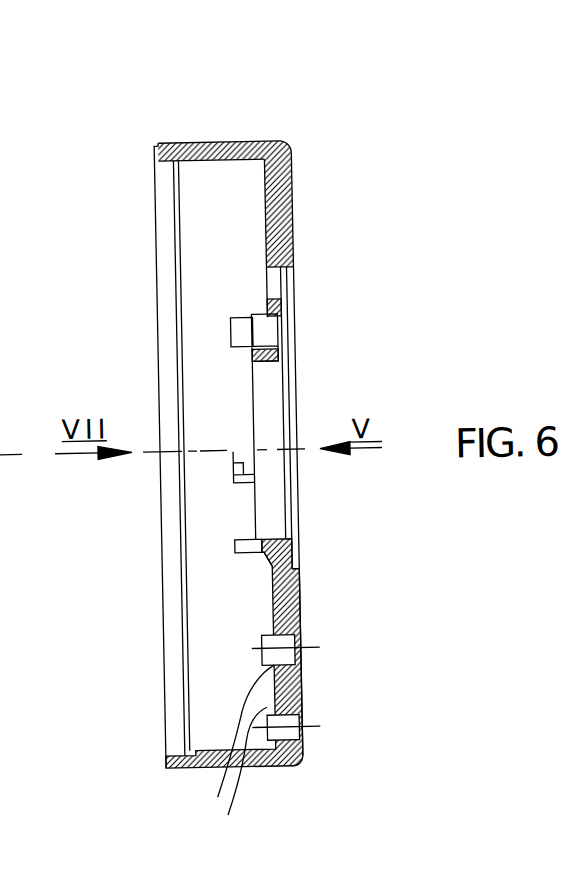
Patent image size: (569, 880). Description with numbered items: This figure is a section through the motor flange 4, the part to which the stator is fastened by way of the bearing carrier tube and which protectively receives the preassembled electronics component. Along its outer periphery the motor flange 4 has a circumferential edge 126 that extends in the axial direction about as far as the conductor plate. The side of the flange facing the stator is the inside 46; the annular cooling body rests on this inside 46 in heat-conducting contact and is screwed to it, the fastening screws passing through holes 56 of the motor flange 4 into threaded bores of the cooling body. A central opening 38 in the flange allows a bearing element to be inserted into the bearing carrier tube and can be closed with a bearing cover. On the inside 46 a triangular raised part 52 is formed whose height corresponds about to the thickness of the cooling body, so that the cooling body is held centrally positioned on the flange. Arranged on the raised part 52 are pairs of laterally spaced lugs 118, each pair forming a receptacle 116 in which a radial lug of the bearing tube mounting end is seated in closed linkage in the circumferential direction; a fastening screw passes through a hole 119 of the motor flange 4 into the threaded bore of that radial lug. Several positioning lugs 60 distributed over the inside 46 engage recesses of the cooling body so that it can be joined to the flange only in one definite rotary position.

The motor flange 4 is at (296, 147).
The circumferential edge 126 is at (224, 141).
The inside 46 is at (270, 200).
The holes 56 is at (258, 284).
The hole 119 is at (293, 333).
The central opening 38 is at (277, 399).
The lugs 118 is at (243, 329).
The receptacle 116 is at (251, 508).
The raised part 52 is at (265, 566).
The positioning lugs 60 is at (232, 749).